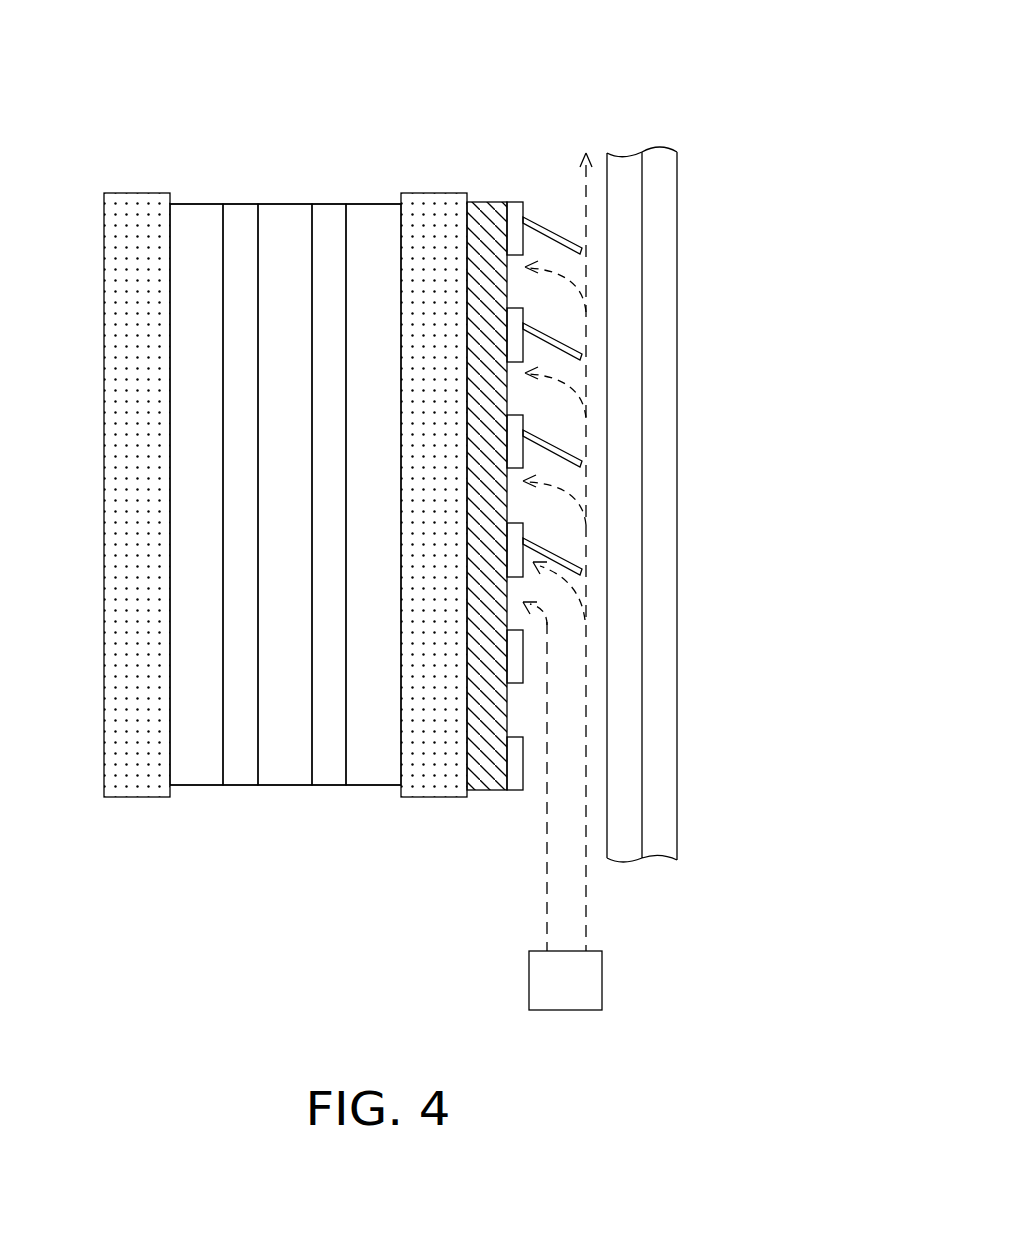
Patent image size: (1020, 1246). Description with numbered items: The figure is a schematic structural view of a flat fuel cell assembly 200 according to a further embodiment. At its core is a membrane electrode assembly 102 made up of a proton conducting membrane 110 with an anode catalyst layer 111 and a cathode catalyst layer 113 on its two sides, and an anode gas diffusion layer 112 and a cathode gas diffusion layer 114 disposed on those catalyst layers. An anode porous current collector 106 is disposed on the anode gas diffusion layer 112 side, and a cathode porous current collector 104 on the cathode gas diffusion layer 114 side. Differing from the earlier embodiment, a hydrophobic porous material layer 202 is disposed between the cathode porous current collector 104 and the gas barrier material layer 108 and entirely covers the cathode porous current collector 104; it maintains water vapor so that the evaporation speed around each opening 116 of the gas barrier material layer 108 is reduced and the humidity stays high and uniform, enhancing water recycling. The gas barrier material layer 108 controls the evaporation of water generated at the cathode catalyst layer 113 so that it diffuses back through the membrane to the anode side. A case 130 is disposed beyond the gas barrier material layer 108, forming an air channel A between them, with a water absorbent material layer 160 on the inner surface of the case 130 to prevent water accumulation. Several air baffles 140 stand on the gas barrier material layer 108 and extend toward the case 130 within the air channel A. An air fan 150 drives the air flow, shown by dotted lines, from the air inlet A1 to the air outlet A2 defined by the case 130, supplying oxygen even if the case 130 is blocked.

The membrane electrode assembly 102 is at (177, 190).
The cathode porous current collector 104 is at (418, 787).
The anode porous current collector 106 is at (132, 785).
The gas barrier material layer 108 is at (515, 785).
The proton conducting membrane 110 is at (280, 777).
The anode catalyst layer 111 is at (238, 777).
The anode gas diffusion layer 112 is at (195, 777).
The cathode catalyst layer 113 is at (330, 777).
The cathode gas diffusion layer 114 is at (362, 777).
The opening 116 is at (518, 708).
The case 130 is at (660, 550).
The air baffle 140 is at (560, 232).
The air fan 150 is at (589, 996).
The water absorbent material layer 160 is at (628, 603).
The flat fuel cell assembly 200 is at (363, 148).
The hydrophobic porous material layer 202 is at (480, 222).
The air channel A is at (568, 482).
The air inlet A1 is at (562, 838).
The air outlet A2 is at (560, 158).